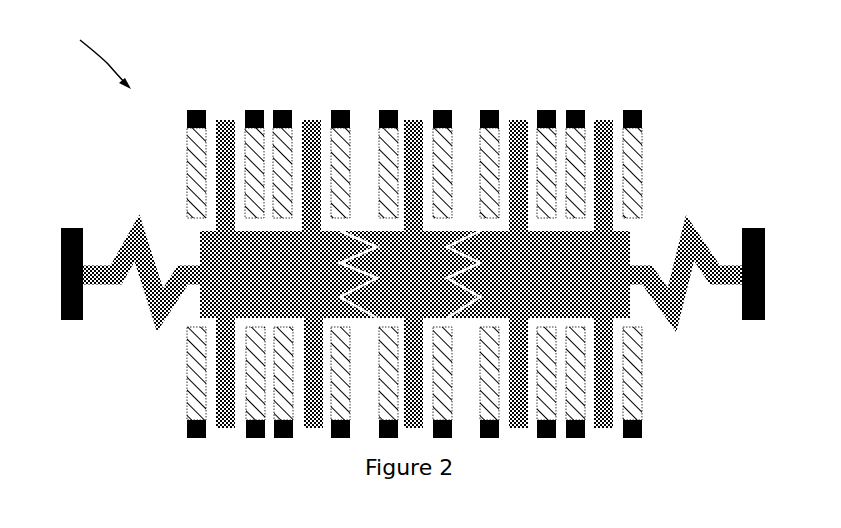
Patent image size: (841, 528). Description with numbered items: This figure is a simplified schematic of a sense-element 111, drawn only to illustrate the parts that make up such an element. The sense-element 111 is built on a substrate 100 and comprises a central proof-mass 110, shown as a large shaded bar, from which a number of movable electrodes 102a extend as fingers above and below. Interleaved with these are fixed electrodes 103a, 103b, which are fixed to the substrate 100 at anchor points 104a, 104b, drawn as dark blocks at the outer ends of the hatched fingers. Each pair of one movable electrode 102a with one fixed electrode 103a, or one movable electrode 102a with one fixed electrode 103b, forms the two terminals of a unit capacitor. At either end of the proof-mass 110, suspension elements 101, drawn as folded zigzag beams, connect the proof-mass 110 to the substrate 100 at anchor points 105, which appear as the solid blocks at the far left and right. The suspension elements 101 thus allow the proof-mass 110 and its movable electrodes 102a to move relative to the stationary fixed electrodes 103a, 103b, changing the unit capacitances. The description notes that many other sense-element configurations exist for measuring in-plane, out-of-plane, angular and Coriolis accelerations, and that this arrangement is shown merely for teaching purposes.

The substrate 100 is at (118, 188).
The suspension elements 101 is at (672, 306).
The movable electrodes 102a is at (230, 120).
The fixed electrodes 103a is at (190, 182).
The fixed electrodes 103b is at (264, 130).
The anchor point 104a is at (190, 111).
The anchor point 104b is at (258, 112).
The anchor points 105 is at (75, 322).
The proof-mass 110 is at (608, 275).
The sense-element 111 is at (97, 58).